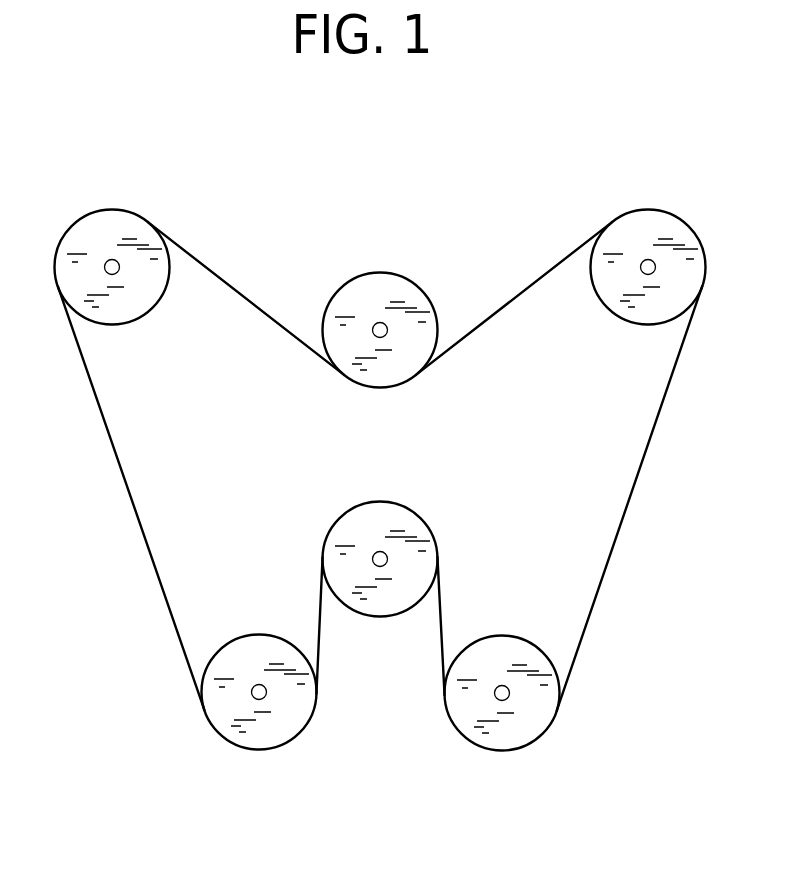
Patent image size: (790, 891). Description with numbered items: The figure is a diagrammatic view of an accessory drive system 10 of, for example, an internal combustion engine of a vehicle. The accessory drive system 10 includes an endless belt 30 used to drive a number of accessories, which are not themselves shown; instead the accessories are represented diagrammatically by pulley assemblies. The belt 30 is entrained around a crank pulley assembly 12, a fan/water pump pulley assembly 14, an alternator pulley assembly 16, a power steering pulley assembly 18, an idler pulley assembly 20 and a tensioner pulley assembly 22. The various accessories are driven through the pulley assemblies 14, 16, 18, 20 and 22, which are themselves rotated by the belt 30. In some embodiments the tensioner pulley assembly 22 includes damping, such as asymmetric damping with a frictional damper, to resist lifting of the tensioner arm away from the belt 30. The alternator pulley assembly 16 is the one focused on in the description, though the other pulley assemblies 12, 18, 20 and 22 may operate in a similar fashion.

The accessory drive system 10 is at (332, 213).
The crank pulley assembly 12 is at (272, 741).
The fan/water pump pulley assembly 14 is at (393, 517).
The alternator pulley assembly 16 is at (538, 717).
The power steering pulley assembly 18 is at (653, 228).
The idler pulley assembly 20 is at (382, 285).
The tensioner pulley assembly 22 is at (116, 224).
The endless belt 30 is at (602, 583).